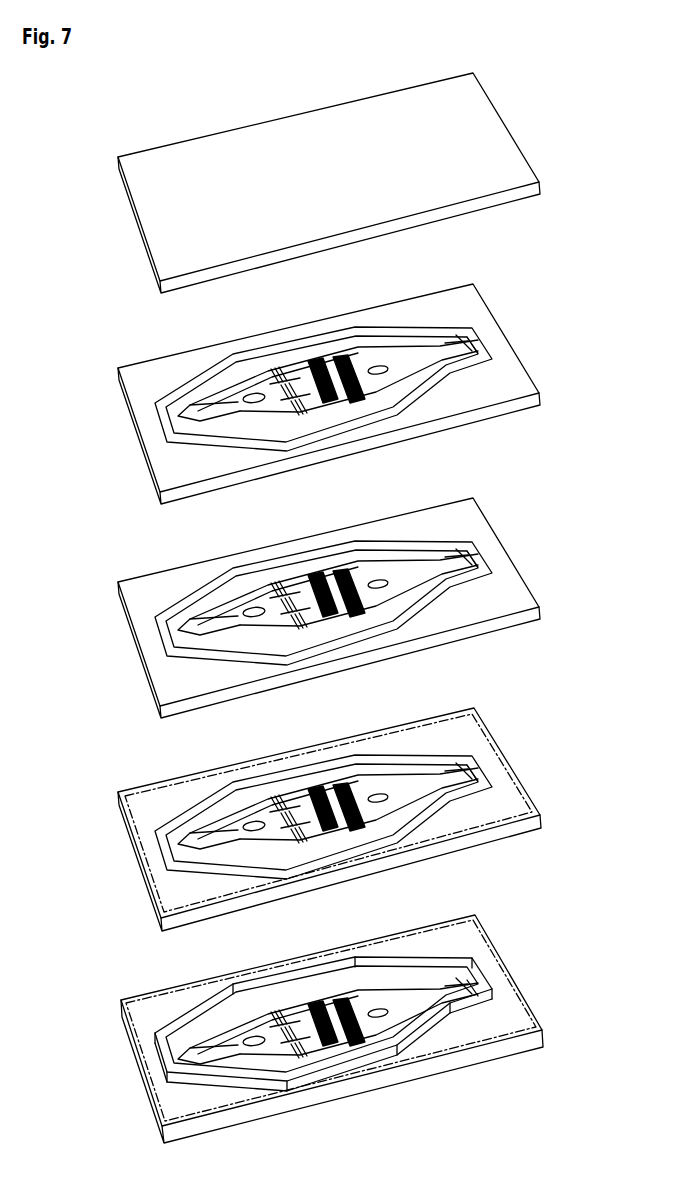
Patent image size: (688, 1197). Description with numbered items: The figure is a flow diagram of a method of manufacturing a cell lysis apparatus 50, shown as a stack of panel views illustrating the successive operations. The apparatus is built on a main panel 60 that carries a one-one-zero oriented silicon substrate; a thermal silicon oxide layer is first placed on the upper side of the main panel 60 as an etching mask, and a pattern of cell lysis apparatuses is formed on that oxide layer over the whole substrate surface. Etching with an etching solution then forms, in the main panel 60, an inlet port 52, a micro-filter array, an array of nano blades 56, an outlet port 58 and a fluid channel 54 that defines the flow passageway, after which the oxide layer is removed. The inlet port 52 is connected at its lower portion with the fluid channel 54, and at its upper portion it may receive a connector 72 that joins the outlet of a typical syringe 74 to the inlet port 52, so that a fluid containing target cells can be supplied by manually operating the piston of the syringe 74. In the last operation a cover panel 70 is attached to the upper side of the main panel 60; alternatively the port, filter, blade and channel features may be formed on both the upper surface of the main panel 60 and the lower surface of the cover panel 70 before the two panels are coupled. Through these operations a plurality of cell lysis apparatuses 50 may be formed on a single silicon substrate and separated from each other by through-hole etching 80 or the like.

The cell lysis apparatus 50 is at (428, 972).
The inlet port 52 is at (452, 558).
The fluid channel 54 is at (362, 576).
The nano blades 56 is at (278, 582).
The outlet port 58 is at (210, 623).
The main panel 60 is at (138, 238).
The cover panel 70 is at (510, 743).
The connector 72 is at (218, 140).
The syringe 74 is at (362, 366).
The through-hole etching 80 is at (177, 1060).